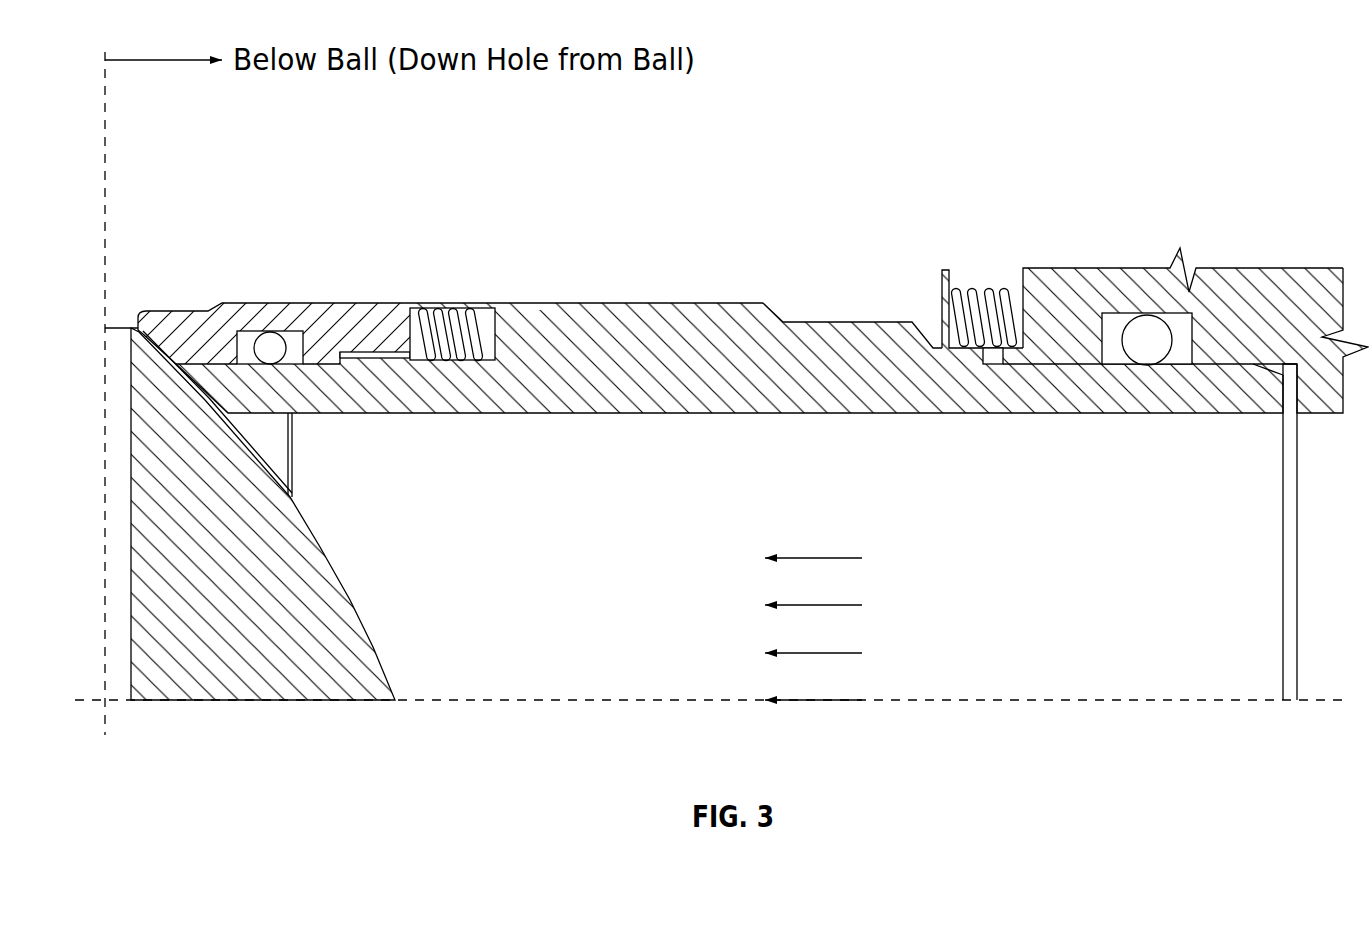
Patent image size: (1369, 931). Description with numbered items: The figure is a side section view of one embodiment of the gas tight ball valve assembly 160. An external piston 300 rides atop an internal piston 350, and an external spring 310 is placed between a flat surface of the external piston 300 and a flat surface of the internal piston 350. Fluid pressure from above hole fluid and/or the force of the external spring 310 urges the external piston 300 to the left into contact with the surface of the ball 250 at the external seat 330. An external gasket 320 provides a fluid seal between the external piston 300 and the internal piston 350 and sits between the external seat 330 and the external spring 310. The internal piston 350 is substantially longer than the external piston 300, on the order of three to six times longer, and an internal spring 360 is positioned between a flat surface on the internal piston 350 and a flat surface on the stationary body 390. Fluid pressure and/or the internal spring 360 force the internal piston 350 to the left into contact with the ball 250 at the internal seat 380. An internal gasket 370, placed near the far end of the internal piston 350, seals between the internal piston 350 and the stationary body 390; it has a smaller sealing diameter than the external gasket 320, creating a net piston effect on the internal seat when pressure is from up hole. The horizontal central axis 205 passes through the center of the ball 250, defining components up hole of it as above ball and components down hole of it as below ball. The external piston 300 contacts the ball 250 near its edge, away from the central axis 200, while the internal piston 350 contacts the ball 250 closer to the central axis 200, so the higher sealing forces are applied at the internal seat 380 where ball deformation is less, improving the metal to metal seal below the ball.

The ball valve assembly 160 is at (567, 270).
The central axis 200 is at (817, 702).
The horizontal central axis 205 is at (105, 156).
The ball 250 is at (233, 650).
The external piston 300 is at (365, 323).
The external spring 310 is at (450, 315).
The external gasket 320 is at (273, 333).
The external seat 330 is at (143, 344).
The internal piston 350 is at (863, 334).
The internal spring 360 is at (985, 292).
The internal gasket 370 is at (1147, 316).
The internal seat 380 is at (210, 406).
The stationary body 390 is at (1248, 268).